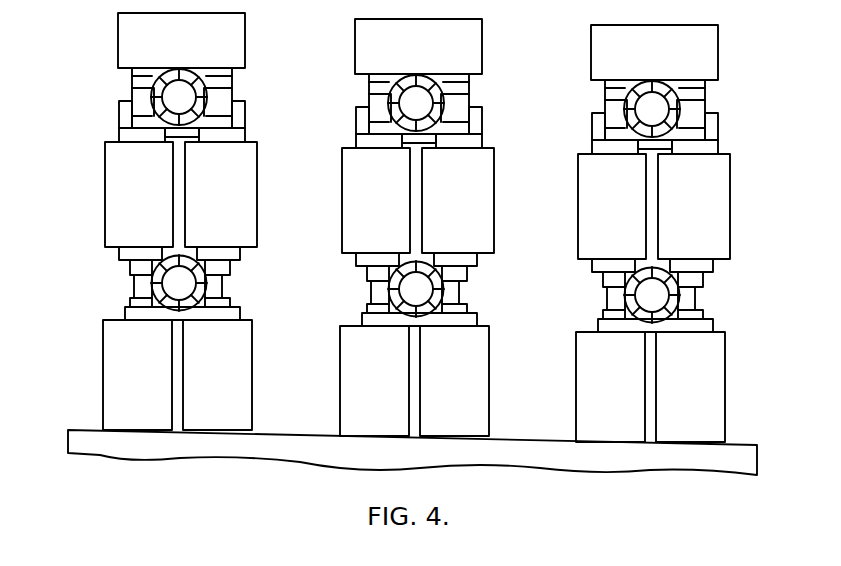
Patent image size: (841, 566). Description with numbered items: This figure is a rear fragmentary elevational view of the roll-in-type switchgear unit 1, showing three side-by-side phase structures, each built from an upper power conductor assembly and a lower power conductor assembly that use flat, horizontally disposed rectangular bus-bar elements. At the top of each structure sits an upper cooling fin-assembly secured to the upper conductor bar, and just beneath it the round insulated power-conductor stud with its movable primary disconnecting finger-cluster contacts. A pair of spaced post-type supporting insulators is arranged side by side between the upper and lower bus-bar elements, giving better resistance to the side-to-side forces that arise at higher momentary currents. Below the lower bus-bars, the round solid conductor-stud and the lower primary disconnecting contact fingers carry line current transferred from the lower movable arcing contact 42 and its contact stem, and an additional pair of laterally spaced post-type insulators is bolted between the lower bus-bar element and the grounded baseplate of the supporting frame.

The roll-in-type switchgear unit 1 is at (116, 33).
The lower movable arcing contact 42 is at (81, 430).